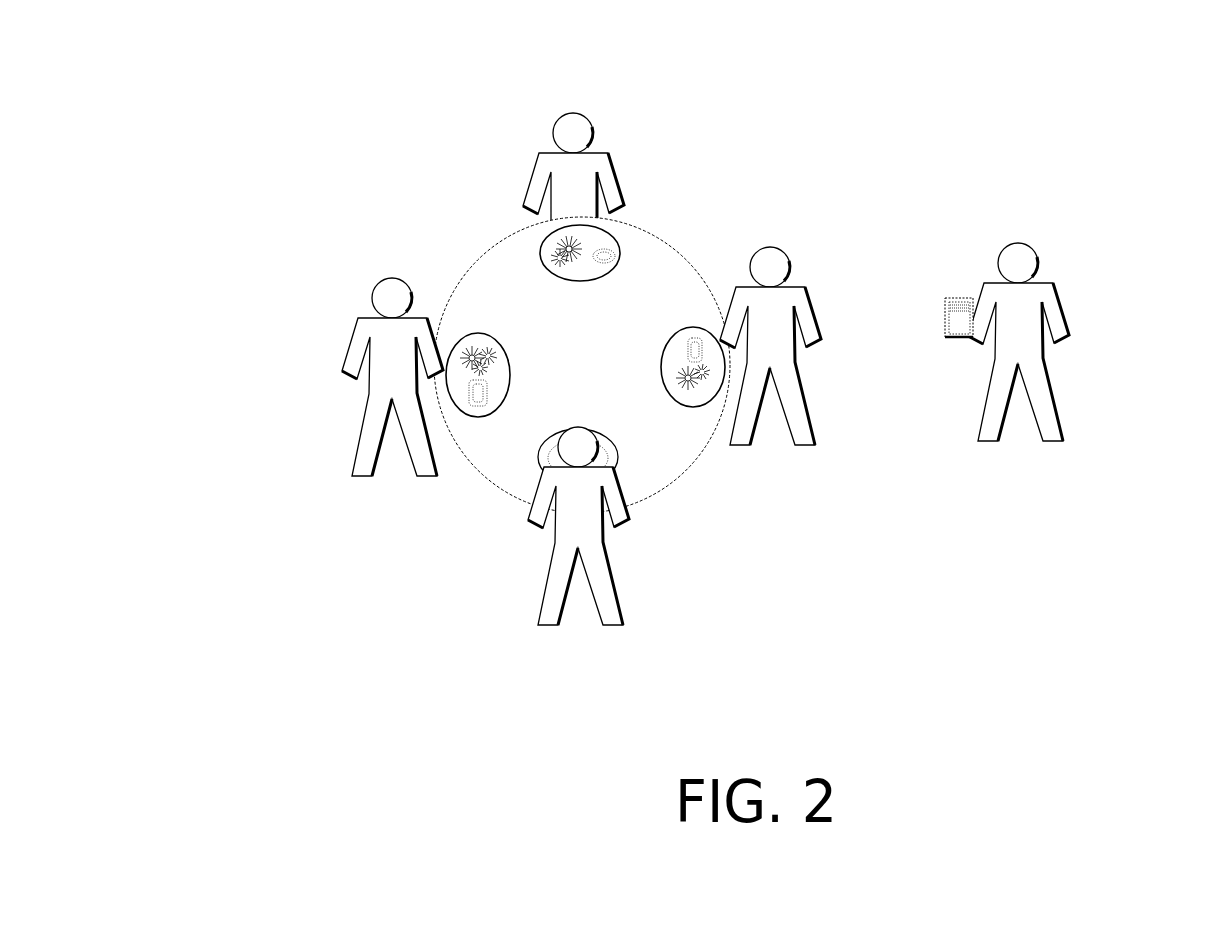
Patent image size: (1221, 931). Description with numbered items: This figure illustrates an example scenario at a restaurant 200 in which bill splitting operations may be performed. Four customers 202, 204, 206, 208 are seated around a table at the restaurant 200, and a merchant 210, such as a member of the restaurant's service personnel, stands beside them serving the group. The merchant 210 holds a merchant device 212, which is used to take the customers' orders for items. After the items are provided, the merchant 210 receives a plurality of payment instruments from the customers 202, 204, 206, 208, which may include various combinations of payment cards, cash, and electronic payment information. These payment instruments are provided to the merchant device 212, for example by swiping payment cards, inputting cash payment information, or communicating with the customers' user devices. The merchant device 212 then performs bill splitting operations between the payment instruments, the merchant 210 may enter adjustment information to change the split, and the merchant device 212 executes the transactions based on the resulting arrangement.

The restaurant 200 is at (234, 52).
The customer 202 is at (791, 250).
The customer 204 is at (593, 115).
The customer 206 is at (364, 281).
The customer 208 is at (626, 537).
The merchant 210 is at (1040, 243).
The merchant device 212 is at (945, 343).